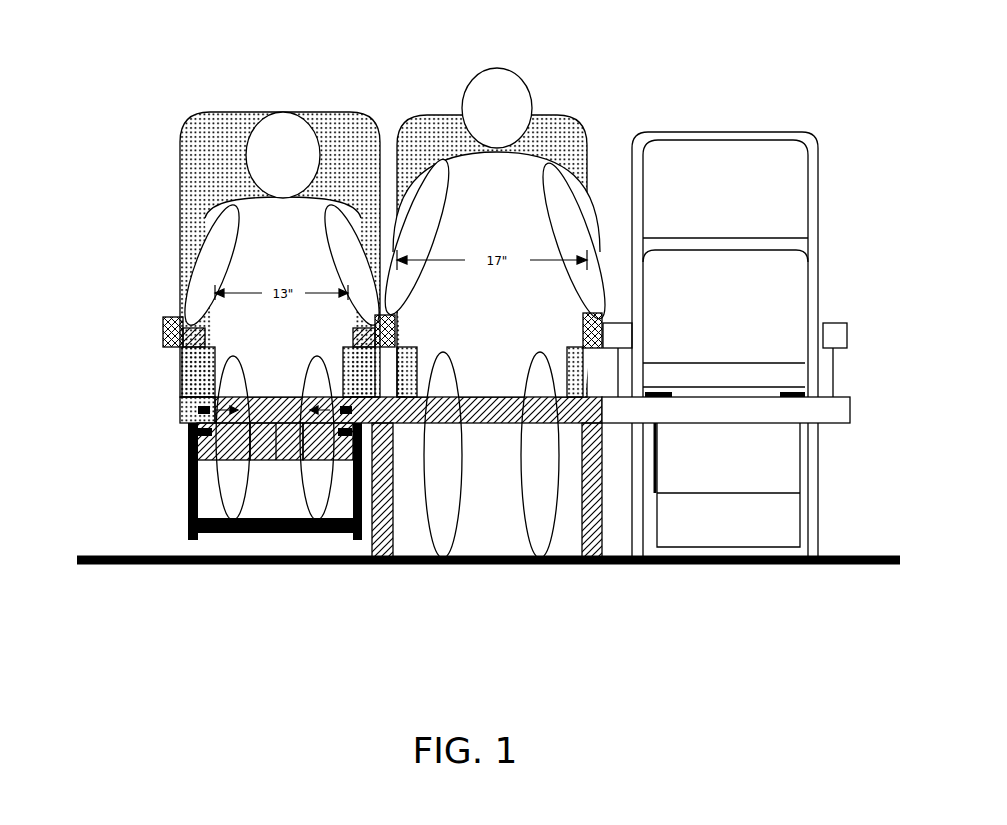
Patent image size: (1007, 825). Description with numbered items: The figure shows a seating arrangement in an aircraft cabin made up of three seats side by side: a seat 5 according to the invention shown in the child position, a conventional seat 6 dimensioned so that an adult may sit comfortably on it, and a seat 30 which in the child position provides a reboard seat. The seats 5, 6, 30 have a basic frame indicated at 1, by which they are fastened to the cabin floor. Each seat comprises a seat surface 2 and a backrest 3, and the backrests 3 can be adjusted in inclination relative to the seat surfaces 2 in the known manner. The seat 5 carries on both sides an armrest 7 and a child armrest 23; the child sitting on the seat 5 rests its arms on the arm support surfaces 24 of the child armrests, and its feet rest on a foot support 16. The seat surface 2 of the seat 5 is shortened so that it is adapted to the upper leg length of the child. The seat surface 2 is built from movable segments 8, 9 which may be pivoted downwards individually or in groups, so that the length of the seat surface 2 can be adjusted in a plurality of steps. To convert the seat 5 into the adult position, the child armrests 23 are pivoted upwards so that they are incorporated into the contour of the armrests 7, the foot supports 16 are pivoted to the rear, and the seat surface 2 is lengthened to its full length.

The basic frame 1 is at (382, 543).
The seat surface 2 is at (263, 413).
The backrest 3 is at (200, 177).
The seat according to the invention 5 is at (345, 122).
The conventional seat 6 is at (552, 125).
The armrest 7 is at (165, 337).
The movable segment 8 is at (285, 460).
The movable segment 9 is at (268, 440).
The foot support 16 is at (188, 508).
The child armrest 23 is at (183, 350).
The arm support surface 24 is at (192, 322).
The reboard seat 30 is at (778, 158).